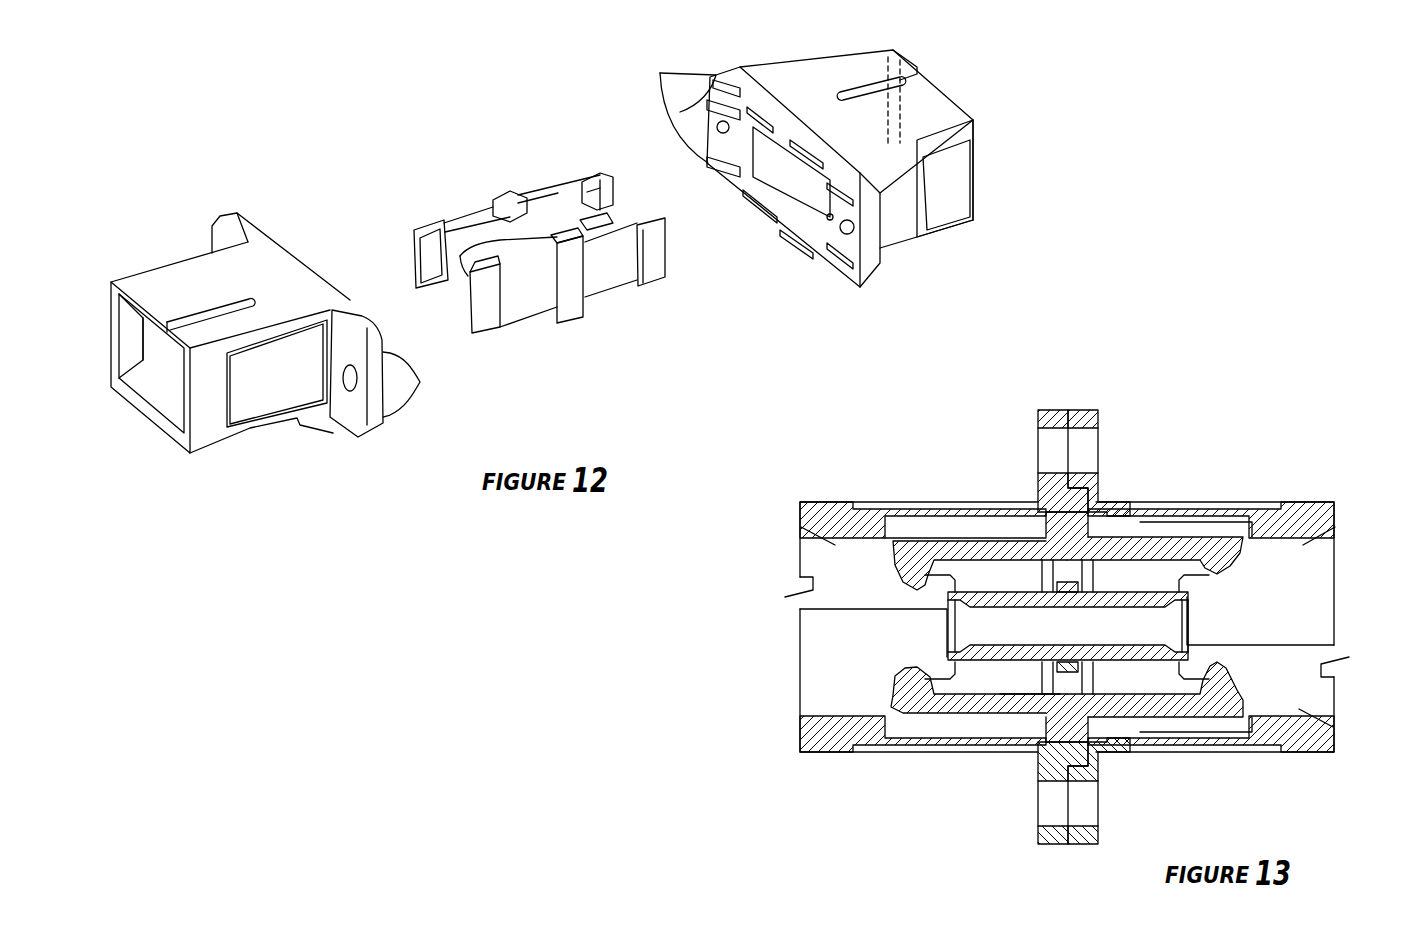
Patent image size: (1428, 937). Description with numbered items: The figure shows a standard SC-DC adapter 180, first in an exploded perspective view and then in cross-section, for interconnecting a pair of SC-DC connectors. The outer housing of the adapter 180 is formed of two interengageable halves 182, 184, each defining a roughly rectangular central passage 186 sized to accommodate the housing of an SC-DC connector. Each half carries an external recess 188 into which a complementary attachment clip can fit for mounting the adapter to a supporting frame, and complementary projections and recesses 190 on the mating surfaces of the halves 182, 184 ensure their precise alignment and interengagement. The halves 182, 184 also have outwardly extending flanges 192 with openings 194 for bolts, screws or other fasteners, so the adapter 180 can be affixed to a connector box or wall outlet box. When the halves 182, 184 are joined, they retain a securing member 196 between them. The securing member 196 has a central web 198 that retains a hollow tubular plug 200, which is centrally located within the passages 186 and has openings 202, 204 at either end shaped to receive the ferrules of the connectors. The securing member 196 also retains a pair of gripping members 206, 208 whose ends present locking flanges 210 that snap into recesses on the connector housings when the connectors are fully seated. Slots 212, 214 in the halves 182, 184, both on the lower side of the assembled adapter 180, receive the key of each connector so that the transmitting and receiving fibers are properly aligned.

In FIG. 12, the adapter 180 is at (547, 342).
In FIG. 13, the adapter 180 is at (1263, 430).
In FIG. 12, the housing half 182 is at (140, 262).
In FIG. 13, the housing half 182 is at (856, 487).
In FIG. 12, the housing half 184 is at (1030, 46).
In FIG. 13, the housing half 184 is at (1179, 495).
In FIG. 12, the central passage 186 is at (143, 353).
In FIG. 13, the central passage 186 is at (820, 650).
In FIG. 12, the external recess 188 is at (250, 390).
In FIG. 12, the projections and recesses 190 is at (717, 93).
In FIG. 12, the flange 192 is at (214, 236).
In FIG. 13, the flange 192 is at (1057, 420).
In FIG. 12, the opening 194 is at (348, 366).
In FIG. 13, the opening 194 is at (1052, 470).
In FIG. 12, the securing member 196 is at (527, 186).
In FIG. 13, the securing member 196 is at (1018, 724).
In FIG. 12, the central web 198 is at (583, 290).
In FIG. 13, the central web 198 is at (1045, 583).
In FIG. 12, the hollow tubular plug 200 is at (510, 247).
In FIG. 13, the hollow tubular plug 200 is at (983, 662).
In FIG. 12, the opening 202 is at (467, 262).
In FIG. 13, the opening 202 is at (950, 648).
In FIG. 12, the opening 204 is at (615, 218).
In FIG. 13, the opening 204 is at (1190, 635).
In FIG. 12, the gripping member 206 is at (556, 193).
In FIG. 13, the gripping member 206 is at (1140, 523).
In FIG. 12, the gripping member 208 is at (610, 278).
In FIG. 13, the gripping member 208 is at (1133, 716).
In FIG. 12, the locking flange 210 is at (420, 250).
In FIG. 13, the locking flange 210 is at (920, 585).
In FIG. 12, the slot 212 is at (170, 350).
In FIG. 13, the slot 212 is at (790, 596).
In FIG. 12, the slot 214 is at (885, 82).
In FIG. 13, the slot 214 is at (1320, 668).